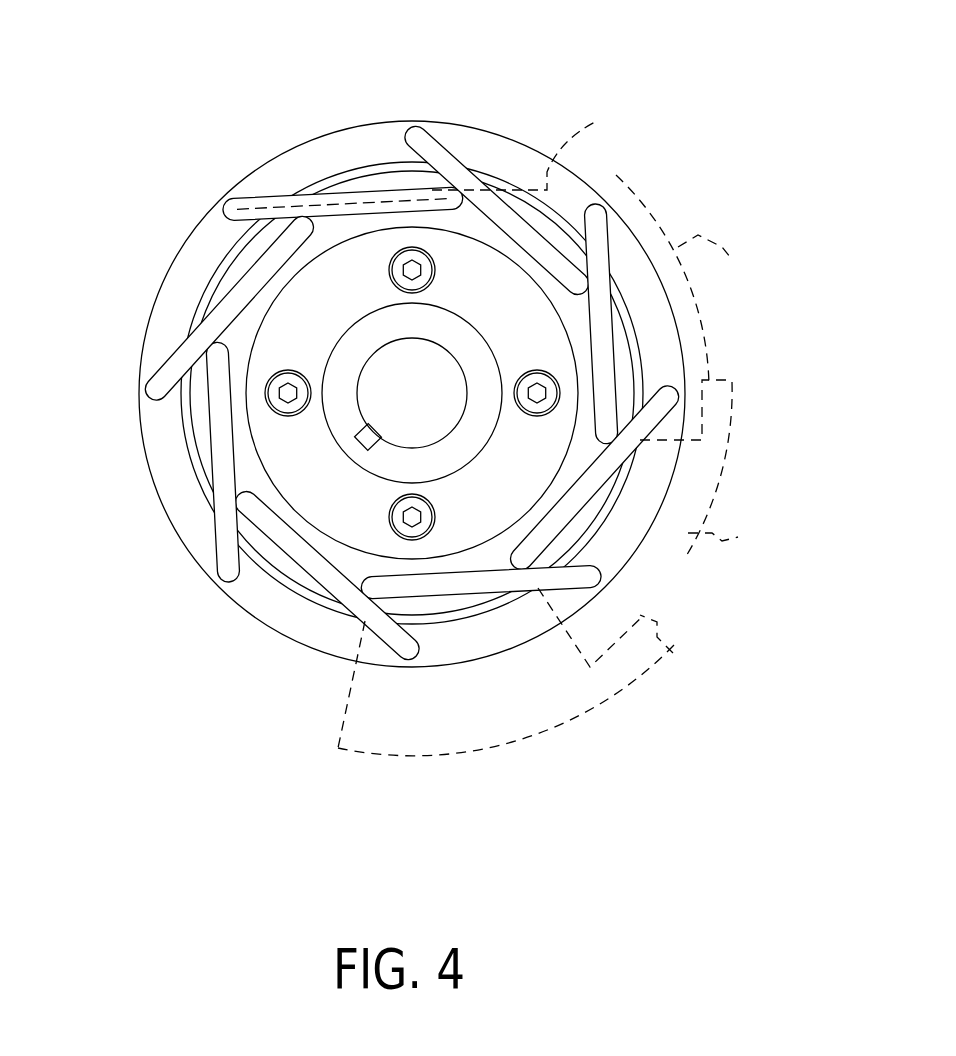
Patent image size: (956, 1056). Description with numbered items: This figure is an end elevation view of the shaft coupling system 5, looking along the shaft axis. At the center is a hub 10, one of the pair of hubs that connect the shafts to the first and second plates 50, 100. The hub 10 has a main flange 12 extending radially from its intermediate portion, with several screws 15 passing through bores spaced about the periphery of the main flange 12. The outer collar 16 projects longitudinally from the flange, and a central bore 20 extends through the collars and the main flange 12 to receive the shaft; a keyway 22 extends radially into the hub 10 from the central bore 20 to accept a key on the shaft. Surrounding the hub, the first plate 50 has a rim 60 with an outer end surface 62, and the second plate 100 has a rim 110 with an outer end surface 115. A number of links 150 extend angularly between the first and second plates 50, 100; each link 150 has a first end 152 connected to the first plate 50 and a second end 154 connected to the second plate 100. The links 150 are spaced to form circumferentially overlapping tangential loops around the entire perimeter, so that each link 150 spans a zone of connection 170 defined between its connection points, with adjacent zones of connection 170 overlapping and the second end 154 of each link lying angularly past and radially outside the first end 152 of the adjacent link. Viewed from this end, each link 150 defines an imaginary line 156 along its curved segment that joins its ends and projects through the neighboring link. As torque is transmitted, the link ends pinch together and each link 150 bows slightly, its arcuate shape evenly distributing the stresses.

The shaft coupling system 5 is at (223, 85).
The hub 10 is at (178, 430).
The main flange 12 is at (304, 326).
The screws 15 is at (428, 270).
The outer collar 16 is at (458, 446).
The central bore 20 is at (447, 388).
The keyway 22 is at (372, 436).
The first plate 50 is at (205, 262).
The rim 60 is at (442, 533).
The outer end surface 62 is at (493, 556).
The second plate 100 is at (470, 100).
The rim 110 is at (205, 580).
The outer end surface 115 is at (190, 540).
The link 150 is at (338, 178).
The first end 152 is at (462, 165).
The second end 154 is at (408, 130).
The imaginary line 156 is at (548, 165).
The zone of connection 170 is at (732, 258).